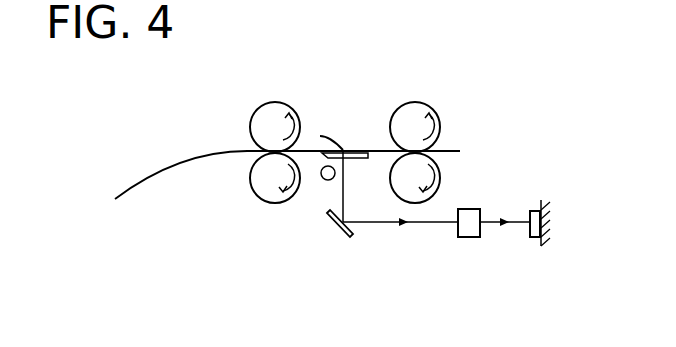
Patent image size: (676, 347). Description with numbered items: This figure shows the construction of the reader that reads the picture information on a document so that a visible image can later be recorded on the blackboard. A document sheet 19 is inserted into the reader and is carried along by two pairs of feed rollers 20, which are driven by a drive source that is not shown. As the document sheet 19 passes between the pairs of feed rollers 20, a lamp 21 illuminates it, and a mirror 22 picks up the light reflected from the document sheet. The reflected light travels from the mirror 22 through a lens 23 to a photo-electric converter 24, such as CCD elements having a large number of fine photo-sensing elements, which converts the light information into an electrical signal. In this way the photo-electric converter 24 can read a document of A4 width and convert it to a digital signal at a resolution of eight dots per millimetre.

The document sheet 19 is at (140, 178).
The feed rollers 20 is at (268, 101).
The lamp 21 is at (321, 180).
The mirror 22 is at (344, 238).
The lens 23 is at (468, 238).
The photo-electric converter 24 is at (537, 238).